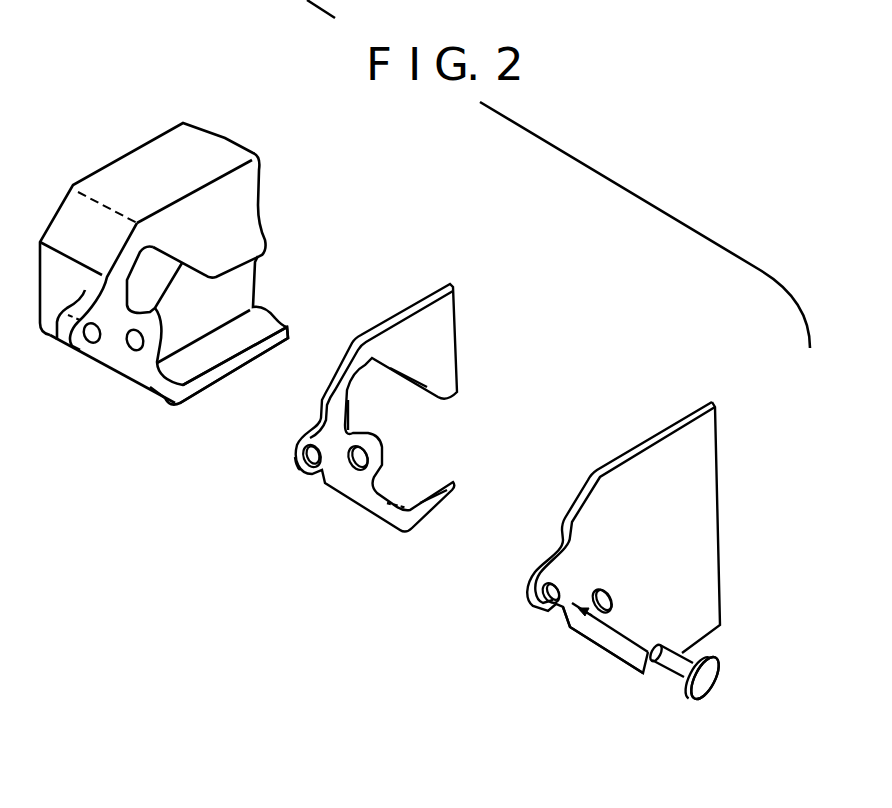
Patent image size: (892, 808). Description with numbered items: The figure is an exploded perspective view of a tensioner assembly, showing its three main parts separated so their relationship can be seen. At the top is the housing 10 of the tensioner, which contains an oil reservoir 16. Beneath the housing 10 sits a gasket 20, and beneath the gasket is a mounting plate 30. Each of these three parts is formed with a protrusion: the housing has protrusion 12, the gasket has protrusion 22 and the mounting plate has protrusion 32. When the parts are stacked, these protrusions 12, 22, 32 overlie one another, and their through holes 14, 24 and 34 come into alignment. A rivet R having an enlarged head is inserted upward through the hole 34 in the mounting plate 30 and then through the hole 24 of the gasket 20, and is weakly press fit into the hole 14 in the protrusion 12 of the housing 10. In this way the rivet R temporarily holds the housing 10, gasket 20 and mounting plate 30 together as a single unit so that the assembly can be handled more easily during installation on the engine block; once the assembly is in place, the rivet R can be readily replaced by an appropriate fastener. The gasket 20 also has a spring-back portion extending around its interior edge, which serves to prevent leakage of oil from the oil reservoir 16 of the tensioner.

The housing 10 is at (125, 181).
The protrusion 12 is at (58, 345).
The through hole 14 is at (97, 344).
The oil reservoir 16 is at (225, 308).
The gasket 20 is at (380, 327).
The protrusion 22 is at (290, 470).
The through hole 24 is at (320, 475).
The mounting plate 30 is at (633, 452).
The protrusion 32 is at (528, 610).
The through hole 34 is at (558, 612).
The rivet R is at (710, 682).